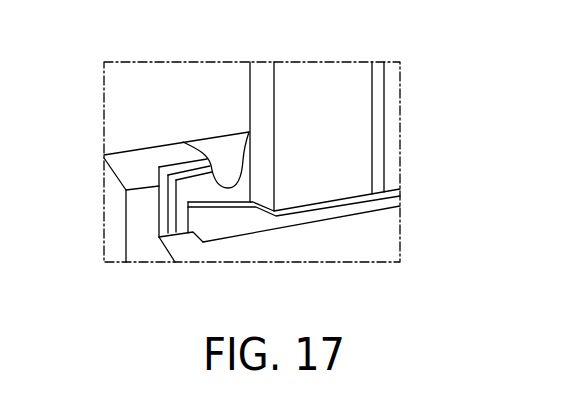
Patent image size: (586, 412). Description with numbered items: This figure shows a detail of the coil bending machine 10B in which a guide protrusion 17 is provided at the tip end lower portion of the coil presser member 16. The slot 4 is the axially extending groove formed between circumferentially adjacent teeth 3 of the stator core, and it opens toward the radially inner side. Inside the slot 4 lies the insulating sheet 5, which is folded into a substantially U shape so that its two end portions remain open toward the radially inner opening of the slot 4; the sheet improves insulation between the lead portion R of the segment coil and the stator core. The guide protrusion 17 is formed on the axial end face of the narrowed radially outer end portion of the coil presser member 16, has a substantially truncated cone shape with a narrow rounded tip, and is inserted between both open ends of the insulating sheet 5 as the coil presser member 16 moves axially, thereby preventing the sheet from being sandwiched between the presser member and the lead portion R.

The coil presser member 16 is at (116, 103).
The coil bending machine 10B is at (268, 58).
The lead portion R is at (345, 140).
The teeth 3 is at (134, 157).
The guide protrusion 17 is at (248, 158).
The slot 4 is at (251, 231).
The insulating sheet 5 is at (205, 218).